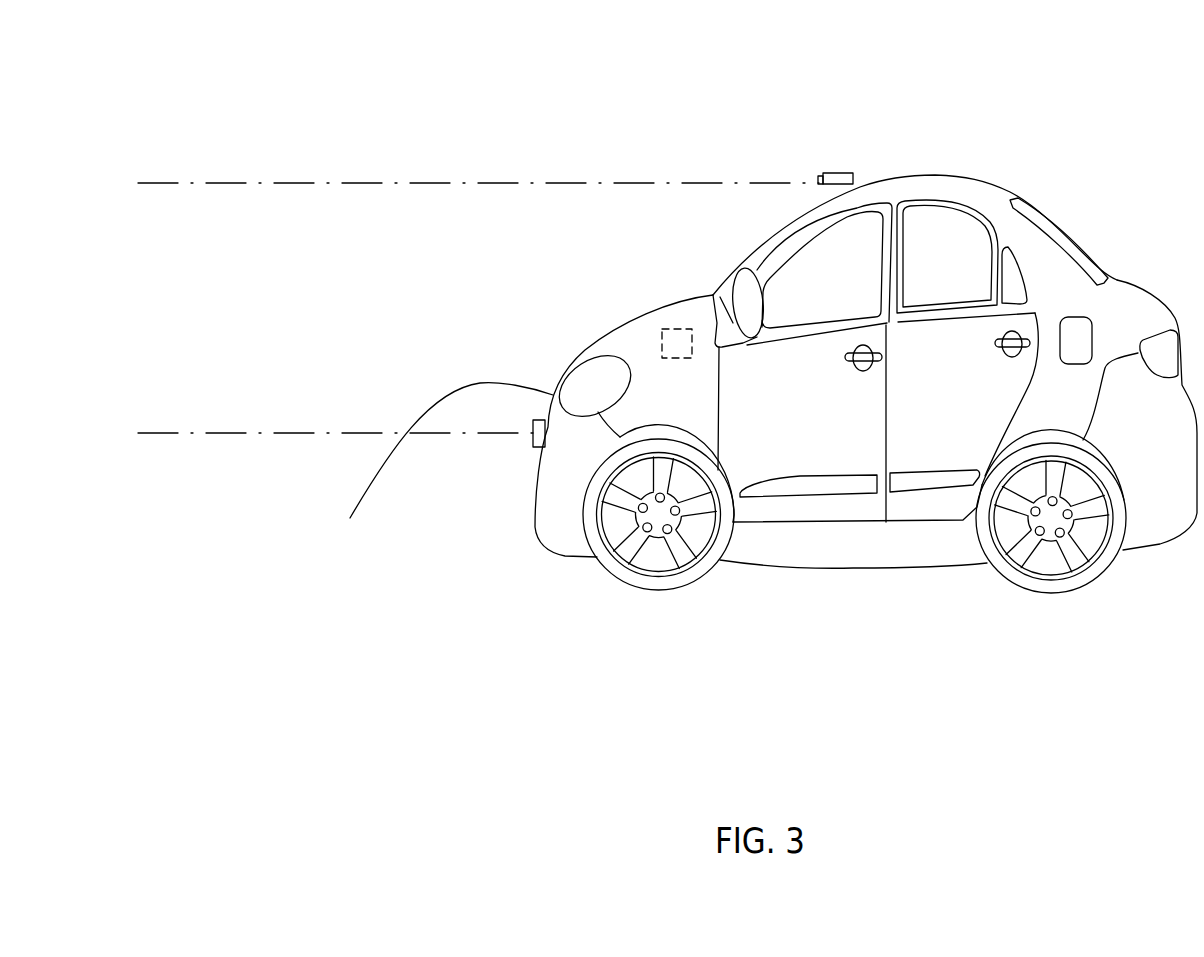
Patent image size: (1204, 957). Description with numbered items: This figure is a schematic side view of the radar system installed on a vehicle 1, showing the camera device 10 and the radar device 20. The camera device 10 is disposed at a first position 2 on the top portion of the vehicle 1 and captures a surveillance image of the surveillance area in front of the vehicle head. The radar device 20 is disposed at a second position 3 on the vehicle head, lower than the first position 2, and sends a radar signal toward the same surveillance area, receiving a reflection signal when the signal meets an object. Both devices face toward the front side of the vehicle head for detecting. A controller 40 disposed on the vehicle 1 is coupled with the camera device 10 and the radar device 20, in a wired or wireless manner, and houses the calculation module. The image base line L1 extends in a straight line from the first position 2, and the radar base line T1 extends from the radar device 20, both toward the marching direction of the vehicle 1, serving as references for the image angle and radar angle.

The vehicle 1 is at (1072, 228).
The first position 2 is at (860, 180).
The second position 3 is at (449, 468).
The camera device 10 is at (843, 165).
The radar device 20 is at (525, 452).
The controller 40 is at (680, 345).
The image base line L1 is at (510, 183).
The radar base line T1 is at (253, 433).